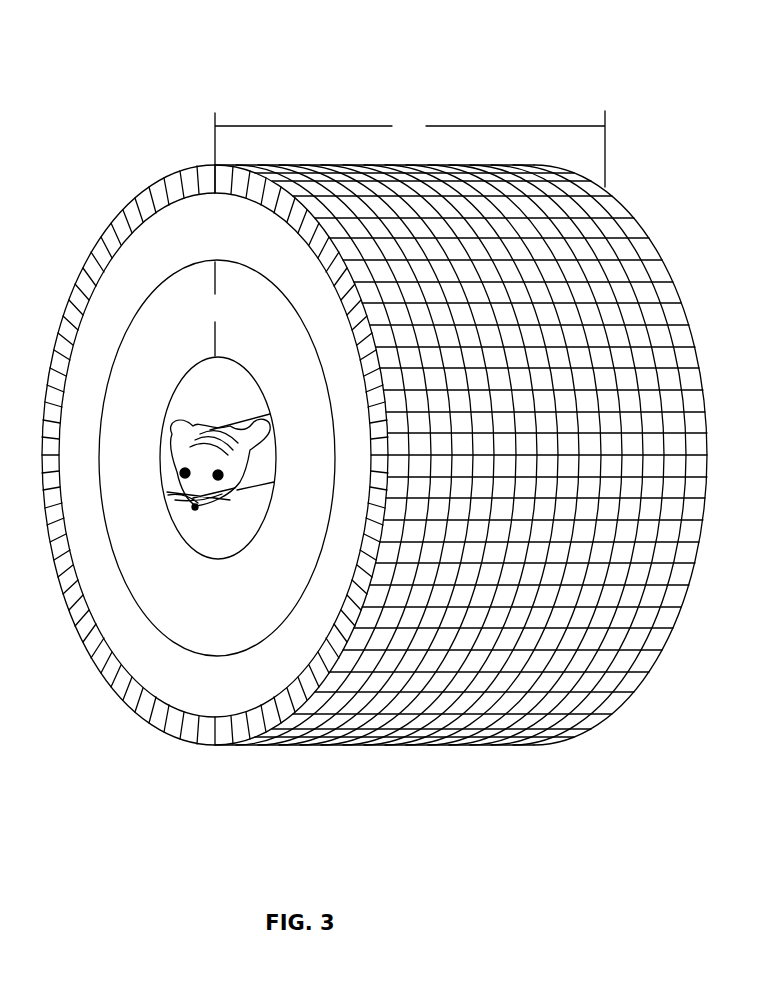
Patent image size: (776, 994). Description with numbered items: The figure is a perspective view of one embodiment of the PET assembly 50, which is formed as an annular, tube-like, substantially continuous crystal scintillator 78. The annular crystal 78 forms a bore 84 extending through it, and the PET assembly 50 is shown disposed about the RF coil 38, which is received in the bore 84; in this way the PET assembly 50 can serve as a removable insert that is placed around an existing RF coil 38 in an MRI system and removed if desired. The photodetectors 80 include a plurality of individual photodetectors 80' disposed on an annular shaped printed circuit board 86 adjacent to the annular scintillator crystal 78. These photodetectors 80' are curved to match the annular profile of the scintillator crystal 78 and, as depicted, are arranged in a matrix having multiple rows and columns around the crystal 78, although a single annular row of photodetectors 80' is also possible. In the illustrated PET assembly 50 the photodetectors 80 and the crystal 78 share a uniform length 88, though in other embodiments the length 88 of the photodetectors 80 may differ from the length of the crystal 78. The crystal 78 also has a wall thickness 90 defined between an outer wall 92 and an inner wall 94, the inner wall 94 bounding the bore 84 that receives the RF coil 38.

The PET assembly 50 is at (402, 70).
The crystal scintillator 78 is at (197, 218).
The printed circuit board 86 is at (298, 237).
The length 88 is at (410, 152).
The photodetectors 80 is at (479, 427).
The photodetectors 80' is at (479, 427).
The RF coil 38 is at (157, 583).
The outer wall 92 is at (134, 335).
The wall thickness 90 is at (215, 309).
The inner wall 94 is at (251, 352).
The bore 84 is at (224, 545).